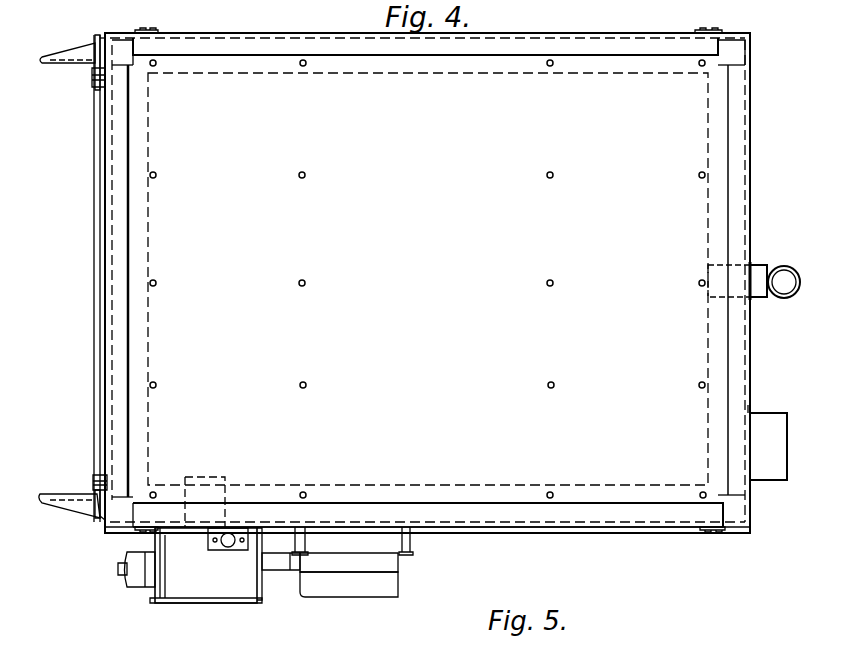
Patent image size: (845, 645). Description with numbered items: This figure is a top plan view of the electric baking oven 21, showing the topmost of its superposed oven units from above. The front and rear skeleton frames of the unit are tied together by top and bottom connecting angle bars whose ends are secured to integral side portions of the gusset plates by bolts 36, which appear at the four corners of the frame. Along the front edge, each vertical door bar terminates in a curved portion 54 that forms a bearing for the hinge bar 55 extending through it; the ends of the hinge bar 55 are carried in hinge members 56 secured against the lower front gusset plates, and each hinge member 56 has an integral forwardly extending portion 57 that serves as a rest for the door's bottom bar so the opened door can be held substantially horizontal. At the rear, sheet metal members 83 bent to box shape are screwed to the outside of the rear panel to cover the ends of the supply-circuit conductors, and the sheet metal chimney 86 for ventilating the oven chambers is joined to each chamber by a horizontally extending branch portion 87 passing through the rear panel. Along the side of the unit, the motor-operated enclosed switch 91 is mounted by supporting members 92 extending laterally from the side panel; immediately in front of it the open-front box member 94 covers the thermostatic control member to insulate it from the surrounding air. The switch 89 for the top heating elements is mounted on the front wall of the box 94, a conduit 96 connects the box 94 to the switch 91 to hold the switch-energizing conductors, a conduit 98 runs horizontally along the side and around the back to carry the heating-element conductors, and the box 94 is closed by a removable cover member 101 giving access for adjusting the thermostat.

The electric baking oven 21 is at (45, 302).
The bolts 36 is at (150, 24).
The curved portion 54 is at (95, 78).
The hinge bar 55 is at (94, 377).
The hinge members 56 is at (96, 40).
The forwardly extending portion 57 is at (48, 68).
The sheet metal members 83 is at (766, 426).
The sheet metal chimney 86 is at (786, 286).
The branch portions 87 is at (740, 273).
The switch 89 is at (135, 587).
The motor-operated enclosed switch 91 is at (383, 587).
The supporting members 92 is at (305, 544).
The open-front box member 94 is at (246, 593).
The conduit 96 is at (277, 567).
The conduit 98 is at (497, 529).
The removable cover member 101 is at (200, 603).